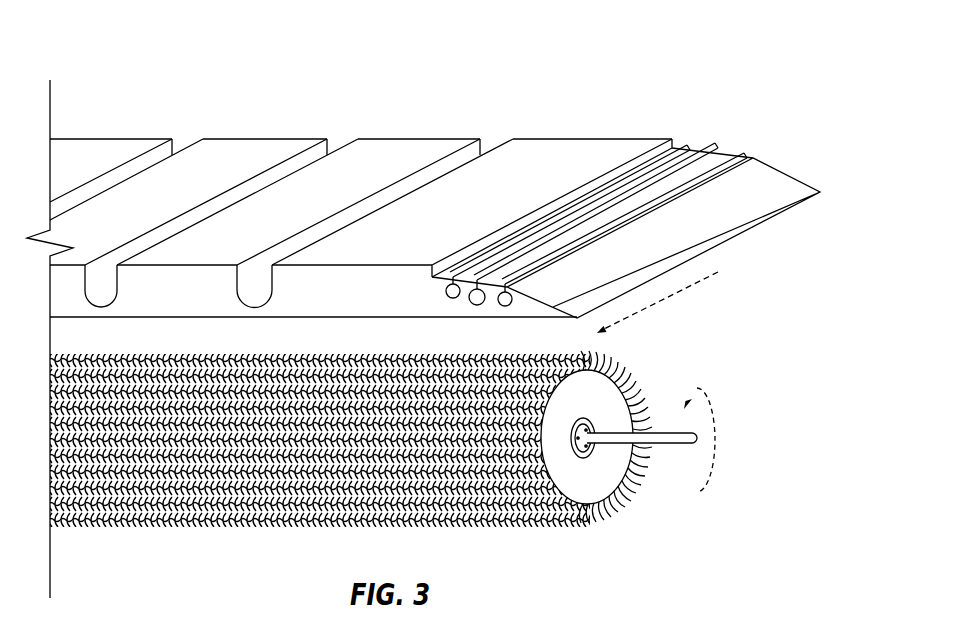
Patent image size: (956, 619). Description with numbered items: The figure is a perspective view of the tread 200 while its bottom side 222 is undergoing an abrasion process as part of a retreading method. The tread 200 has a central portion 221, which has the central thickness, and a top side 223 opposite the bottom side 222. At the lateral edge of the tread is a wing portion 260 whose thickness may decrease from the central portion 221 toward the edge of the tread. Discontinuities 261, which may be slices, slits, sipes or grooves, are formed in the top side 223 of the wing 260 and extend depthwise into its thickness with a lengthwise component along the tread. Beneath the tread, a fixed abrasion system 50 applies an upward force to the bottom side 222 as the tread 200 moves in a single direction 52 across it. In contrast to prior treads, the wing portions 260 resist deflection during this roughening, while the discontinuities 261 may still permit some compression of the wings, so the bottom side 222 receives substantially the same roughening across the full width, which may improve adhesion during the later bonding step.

The tread 200 is at (150, 36).
The central portion 221 is at (333, 106).
The bottom side 222 is at (318, 317).
The top side 223 is at (411, 142).
The wing portion 260 is at (768, 221).
The discontinuity 261 is at (746, 159).
The abrasion system 50 is at (188, 528).
The single direction 52 is at (667, 303).